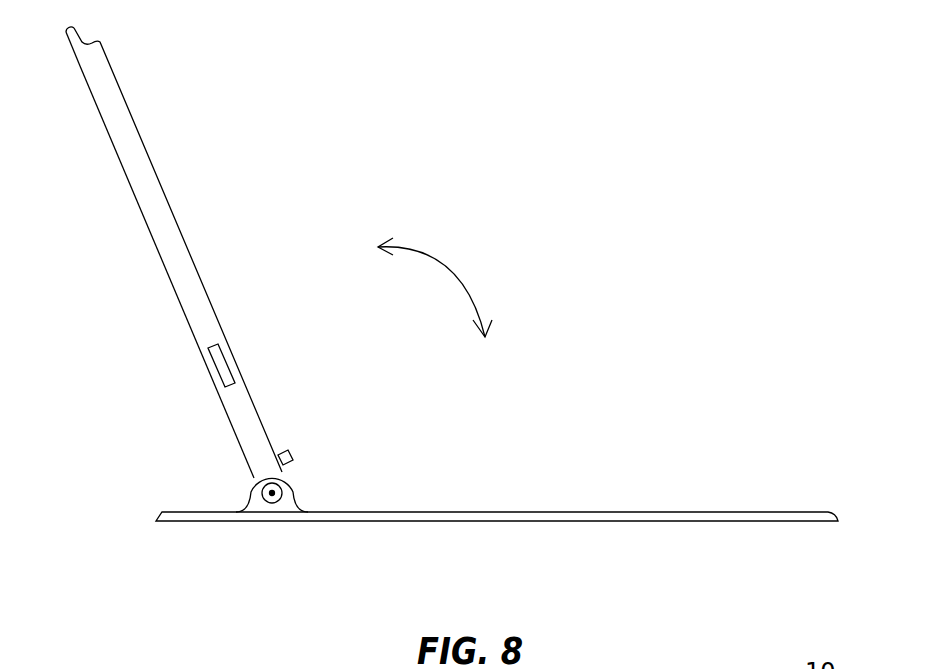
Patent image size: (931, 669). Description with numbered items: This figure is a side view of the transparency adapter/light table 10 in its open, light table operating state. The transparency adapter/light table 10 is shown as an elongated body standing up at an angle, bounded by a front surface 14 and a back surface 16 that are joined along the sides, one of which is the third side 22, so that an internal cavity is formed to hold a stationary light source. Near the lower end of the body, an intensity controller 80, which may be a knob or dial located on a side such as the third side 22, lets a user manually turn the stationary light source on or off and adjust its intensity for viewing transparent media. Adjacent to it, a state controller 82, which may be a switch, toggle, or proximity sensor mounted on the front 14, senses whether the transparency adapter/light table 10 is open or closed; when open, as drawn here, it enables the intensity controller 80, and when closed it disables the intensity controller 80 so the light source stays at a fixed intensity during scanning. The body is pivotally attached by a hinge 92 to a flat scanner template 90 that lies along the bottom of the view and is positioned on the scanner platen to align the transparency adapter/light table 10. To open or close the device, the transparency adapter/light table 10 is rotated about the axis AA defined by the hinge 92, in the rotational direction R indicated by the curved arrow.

The transparency adapter/light table 10 is at (640, 200).
The front surface 14 is at (143, 133).
The back surface 16 is at (112, 143).
The third side 22 is at (148, 208).
The intensity controller 80 is at (212, 368).
The state controller 82 is at (293, 452).
The scanner template 90 is at (666, 510).
The hinge 92 is at (296, 488).
The rotational direction R is at (448, 267).
The axis AA is at (272, 496).